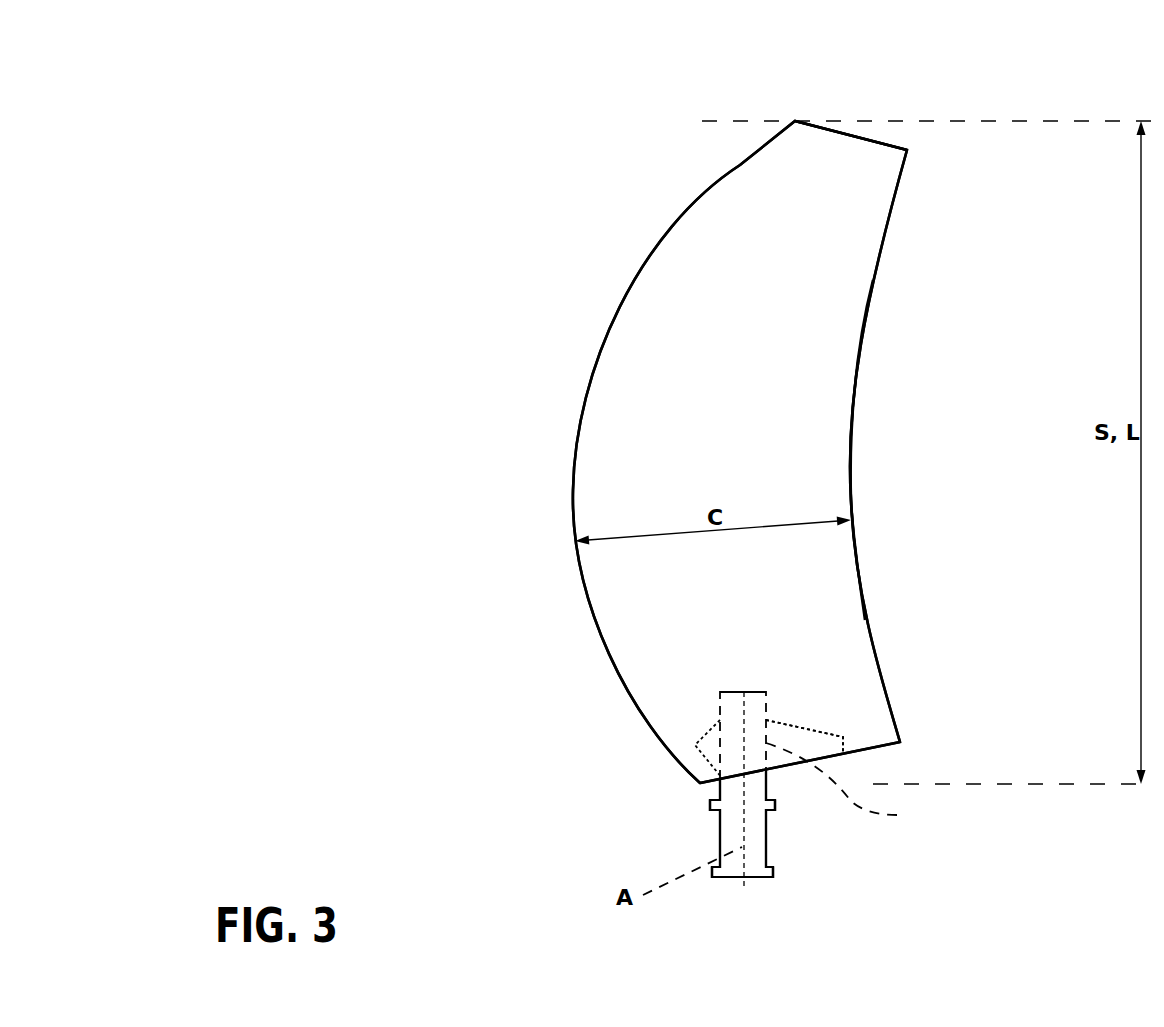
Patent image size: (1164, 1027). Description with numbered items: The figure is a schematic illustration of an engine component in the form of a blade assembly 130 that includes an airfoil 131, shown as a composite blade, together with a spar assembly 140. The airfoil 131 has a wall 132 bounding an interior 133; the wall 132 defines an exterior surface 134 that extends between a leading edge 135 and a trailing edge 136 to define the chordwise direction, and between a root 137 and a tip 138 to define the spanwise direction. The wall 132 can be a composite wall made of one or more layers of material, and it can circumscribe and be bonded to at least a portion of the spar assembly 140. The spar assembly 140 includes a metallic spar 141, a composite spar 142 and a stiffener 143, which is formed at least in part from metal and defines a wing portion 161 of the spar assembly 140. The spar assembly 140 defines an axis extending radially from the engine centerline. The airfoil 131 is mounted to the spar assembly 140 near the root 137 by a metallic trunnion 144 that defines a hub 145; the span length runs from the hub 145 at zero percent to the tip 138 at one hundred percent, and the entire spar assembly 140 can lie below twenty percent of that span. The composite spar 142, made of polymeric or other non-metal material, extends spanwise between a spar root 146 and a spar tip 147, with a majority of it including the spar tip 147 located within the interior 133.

The blade assembly 130 is at (327, 134).
The airfoil 131 is at (858, 100).
The wall 132 is at (820, 282).
The interior 133 is at (797, 605).
The exterior surface 134 is at (750, 424).
The leading edge 135 is at (578, 422).
The trailing edge 136 is at (852, 385).
The root 137 is at (870, 753).
The tip 138 is at (875, 140).
The spar assembly 140 is at (691, 697).
The metallic spar 141 is at (745, 792).
The composite spar 142 is at (853, 784).
The stiffener 143 is at (807, 722).
The wing portion 161 is at (807, 722).
The metallic trunnion 144 is at (782, 861).
The hub 145 is at (700, 795).
The spar root 146 is at (727, 777).
The spar tip 147 is at (733, 690).